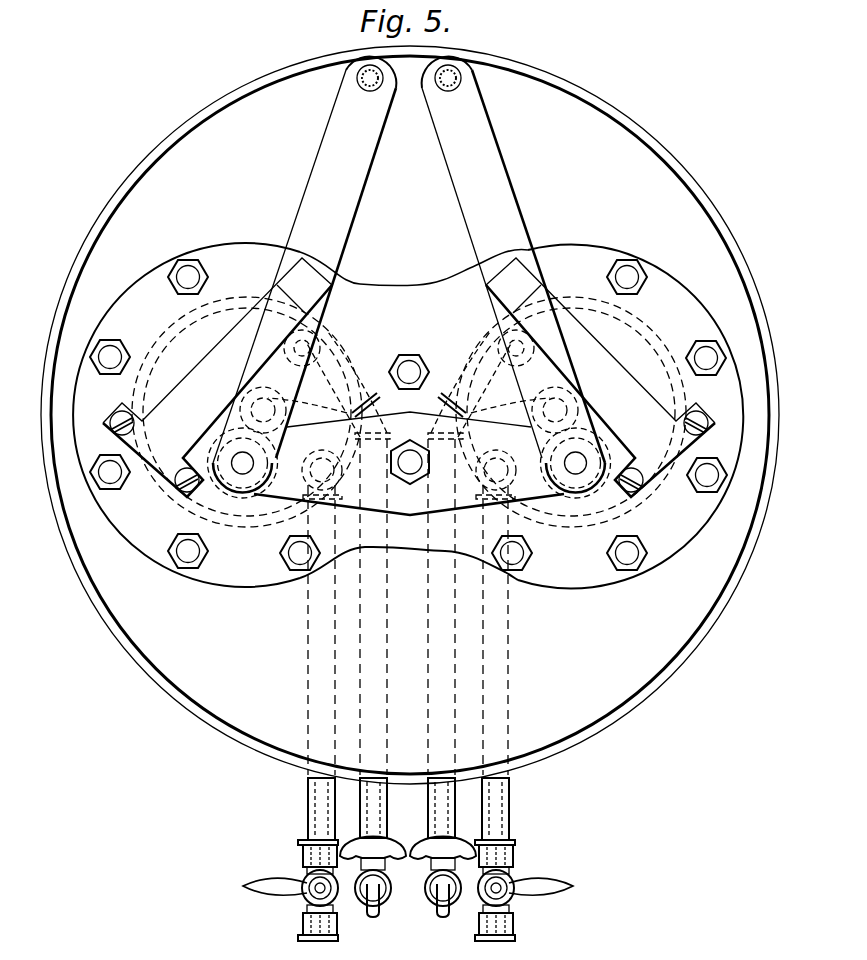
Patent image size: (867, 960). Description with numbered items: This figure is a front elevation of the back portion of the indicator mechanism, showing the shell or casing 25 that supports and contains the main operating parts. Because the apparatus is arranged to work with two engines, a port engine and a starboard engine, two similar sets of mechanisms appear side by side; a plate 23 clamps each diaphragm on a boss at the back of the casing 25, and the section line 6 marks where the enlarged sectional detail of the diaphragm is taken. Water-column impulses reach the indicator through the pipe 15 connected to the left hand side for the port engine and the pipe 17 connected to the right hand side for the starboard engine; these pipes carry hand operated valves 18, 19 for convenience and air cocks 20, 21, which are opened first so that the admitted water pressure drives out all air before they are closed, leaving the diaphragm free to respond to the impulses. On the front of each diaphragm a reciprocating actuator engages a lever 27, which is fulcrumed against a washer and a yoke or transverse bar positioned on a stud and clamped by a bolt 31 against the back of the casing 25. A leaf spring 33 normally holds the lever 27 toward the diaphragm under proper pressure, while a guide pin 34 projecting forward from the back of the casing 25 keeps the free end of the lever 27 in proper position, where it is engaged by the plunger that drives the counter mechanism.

The section line 6 is at (305, 310).
The pipe 15 is at (308, 812).
The pipe 17 is at (510, 805).
The hand operated valve 18 is at (305, 904).
The hand operated valve 19 is at (505, 880).
The air cock 20 is at (386, 916).
The air cock 21 is at (433, 916).
The plate 23 is at (265, 578).
The shell or casing 25 is at (715, 628).
The lever 27 is at (409, 275).
The bolt 31 is at (410, 472).
The leaf spring 33 is at (409, 377).
The guide pin 34 is at (362, 82).